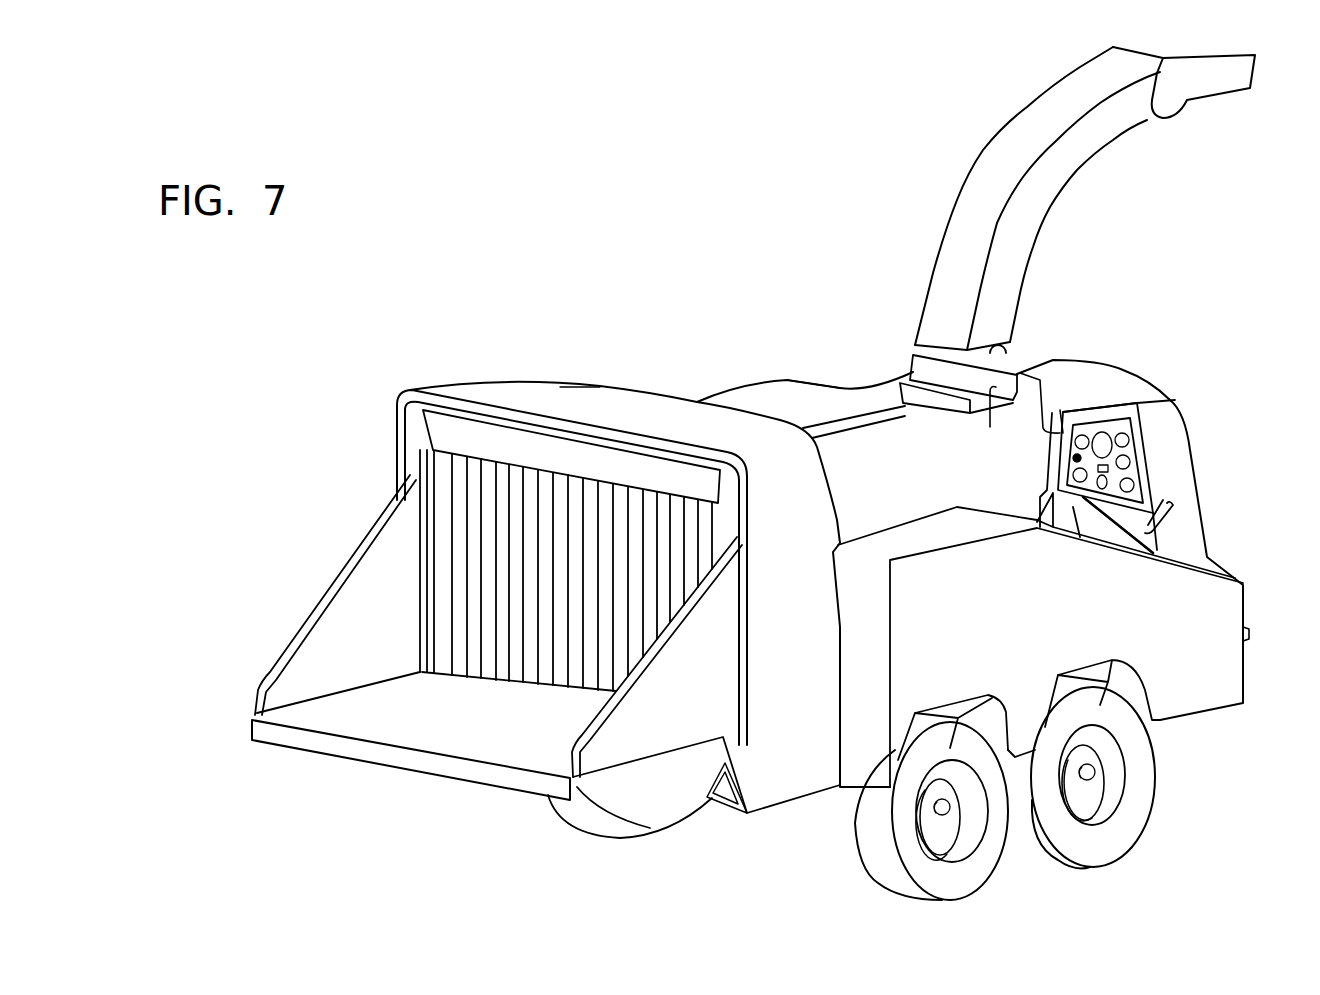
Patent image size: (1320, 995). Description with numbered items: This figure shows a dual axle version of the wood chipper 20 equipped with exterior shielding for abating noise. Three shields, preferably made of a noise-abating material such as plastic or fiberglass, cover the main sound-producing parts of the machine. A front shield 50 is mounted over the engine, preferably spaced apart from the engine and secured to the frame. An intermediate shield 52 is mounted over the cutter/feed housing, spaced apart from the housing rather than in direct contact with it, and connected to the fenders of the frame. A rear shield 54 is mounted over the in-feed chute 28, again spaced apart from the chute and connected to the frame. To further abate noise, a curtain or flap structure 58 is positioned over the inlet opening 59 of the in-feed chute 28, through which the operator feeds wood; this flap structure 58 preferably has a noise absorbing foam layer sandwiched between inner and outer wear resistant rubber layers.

The wood chipper 20 is at (705, 310).
The in-feed chute 28 is at (578, 387).
The front shield 50 is at (1112, 370).
The intermediate shield 52 is at (787, 380).
The rear shield 54 is at (627, 388).
The flap structure 58 is at (452, 598).
The inlet opening 59 is at (495, 462).